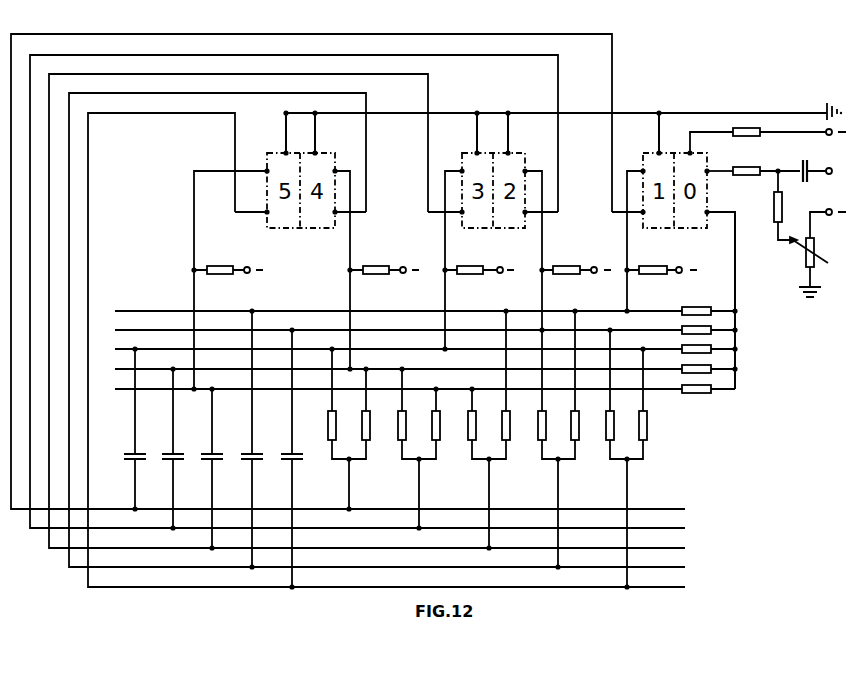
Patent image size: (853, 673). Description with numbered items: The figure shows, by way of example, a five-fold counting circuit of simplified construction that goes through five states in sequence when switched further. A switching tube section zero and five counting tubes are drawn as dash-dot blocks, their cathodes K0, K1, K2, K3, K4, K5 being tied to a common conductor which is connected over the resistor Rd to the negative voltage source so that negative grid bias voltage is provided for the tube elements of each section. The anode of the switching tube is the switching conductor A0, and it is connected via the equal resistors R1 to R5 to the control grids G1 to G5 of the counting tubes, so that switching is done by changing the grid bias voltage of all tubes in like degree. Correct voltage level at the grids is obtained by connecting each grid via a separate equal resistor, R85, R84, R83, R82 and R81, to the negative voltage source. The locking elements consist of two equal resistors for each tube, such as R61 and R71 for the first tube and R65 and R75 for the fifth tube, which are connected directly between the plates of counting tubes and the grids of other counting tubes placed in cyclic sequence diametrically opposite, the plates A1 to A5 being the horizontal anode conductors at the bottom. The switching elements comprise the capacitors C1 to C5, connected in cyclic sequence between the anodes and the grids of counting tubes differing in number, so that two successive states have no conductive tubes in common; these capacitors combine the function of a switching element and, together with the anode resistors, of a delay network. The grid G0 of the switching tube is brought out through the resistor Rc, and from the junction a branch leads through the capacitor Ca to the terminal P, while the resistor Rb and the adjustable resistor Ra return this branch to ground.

The cathode of counting tube 5 K5 is at (294, 133).
The cathode of counting tube 4 K4 is at (324, 133).
The cathode of counting tube 3 K3 is at (486, 133).
The cathode of counting tube 2 K2 is at (517, 133).
The cathode of counting tube 1 K1 is at (650, 133).
The cathode of switching tube section 0 K0 is at (703, 142).
The cathode resistor Rd is at (789, 126).
The resistor Rc is at (766, 184).
The resistor Rb is at (788, 205).
The potentiometer Ra is at (818, 253).
The capacitor Ca is at (811, 164).
The terminal P is at (835, 173).
The grid of switching tube 0 G0 is at (720, 163).
The switching conductor A0 is at (731, 300).
The grid resistor of counting tube 5 R85 is at (228, 262).
The grid resistor of counting tube 4 R84 is at (384, 262).
The grid resistor of counting tube 3 R83 is at (479, 262).
The grid resistor of counting tube 2 R82 is at (576, 262).
The grid resistor of counting tube 1 R81 is at (662, 262).
The first switching resistor R1 is at (696, 303).
The fifth switching resistor R5 is at (696, 398).
The first locking resistor of tube 1 R61 is at (327, 404).
The second locking resistor of tube 1 R71 is at (355, 439).
The first locking resistor of tube 5 R65 is at (605, 394).
The second locking resistor of tube 5 R75 is at (632, 468).
The first switching capacitor C1 is at (131, 429).
The fifth switching capacitor C5 is at (288, 458).
The control grid of counting tube 1 G1 is at (389, 315).
The control grid of counting tube 5 G5 is at (389, 393).
The anode of counting tube 1 A1 is at (358, 513).
The anode of counting tube 5 A5 is at (397, 591).